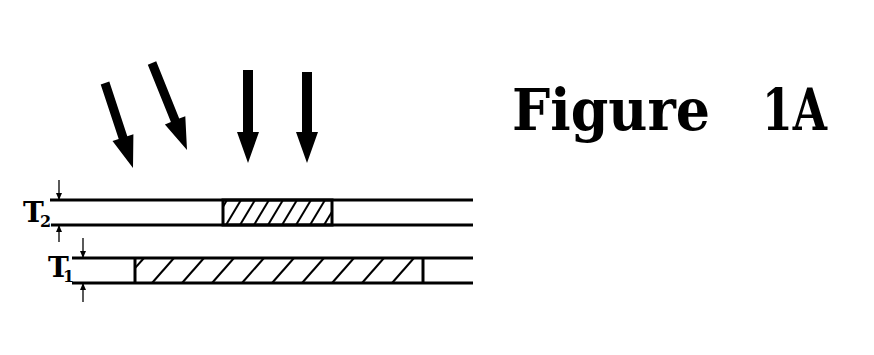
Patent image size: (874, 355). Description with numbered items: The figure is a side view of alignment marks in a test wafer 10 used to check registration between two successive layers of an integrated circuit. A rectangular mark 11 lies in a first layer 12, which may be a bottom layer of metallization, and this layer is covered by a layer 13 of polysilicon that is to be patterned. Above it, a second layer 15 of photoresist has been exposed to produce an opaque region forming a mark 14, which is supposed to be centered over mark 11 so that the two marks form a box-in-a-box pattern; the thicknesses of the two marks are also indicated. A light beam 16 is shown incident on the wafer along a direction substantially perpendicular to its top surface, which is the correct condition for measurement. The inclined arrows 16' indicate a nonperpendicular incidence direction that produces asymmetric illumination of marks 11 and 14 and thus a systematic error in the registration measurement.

The test wafer 10 is at (341, 248).
The mark 11 is at (222, 275).
The first layer 12 is at (437, 268).
The layer of polysilicon 13 is at (272, 282).
The mark 14 is at (326, 206).
The second layer 15 is at (269, 191).
The beam 16 is at (277, 95).
The arrows 16' is at (144, 95).